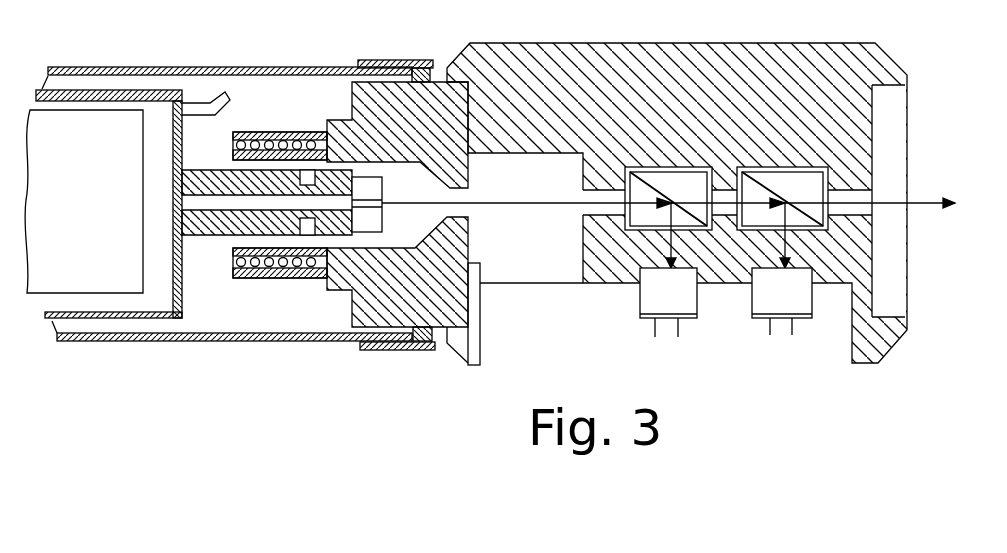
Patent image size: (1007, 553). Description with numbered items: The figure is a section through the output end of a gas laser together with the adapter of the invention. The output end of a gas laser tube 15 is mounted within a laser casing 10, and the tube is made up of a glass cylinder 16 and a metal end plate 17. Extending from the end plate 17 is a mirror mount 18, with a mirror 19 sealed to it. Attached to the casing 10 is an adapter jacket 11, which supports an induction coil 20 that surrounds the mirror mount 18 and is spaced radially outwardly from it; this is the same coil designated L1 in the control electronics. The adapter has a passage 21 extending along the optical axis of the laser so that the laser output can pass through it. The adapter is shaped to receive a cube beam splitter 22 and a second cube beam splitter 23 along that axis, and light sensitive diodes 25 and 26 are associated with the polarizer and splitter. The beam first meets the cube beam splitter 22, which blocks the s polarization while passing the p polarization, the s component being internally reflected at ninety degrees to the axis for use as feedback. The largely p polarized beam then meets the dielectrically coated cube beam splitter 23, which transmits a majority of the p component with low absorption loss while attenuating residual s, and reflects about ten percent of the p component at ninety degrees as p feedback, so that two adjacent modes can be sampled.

The laser casing 10 is at (90, 342).
The adapter jacket 11 is at (622, 45).
The gas laser tube 15 is at (135, 320).
The glass cylinder 16 is at (82, 96).
The metal end plate 17 is at (185, 306).
The mirror mount 18 is at (333, 223).
The mirror 19 is at (365, 222).
The induction coil 20 is at (270, 132).
The coil L1 is at (307, 132).
The passage 21 is at (912, 138).
The cube beam splitter 22 is at (637, 222).
The cube beam splitter 23 is at (805, 222).
The light sensitive diode 25 is at (645, 300).
The light sensitive diode 26 is at (760, 303).